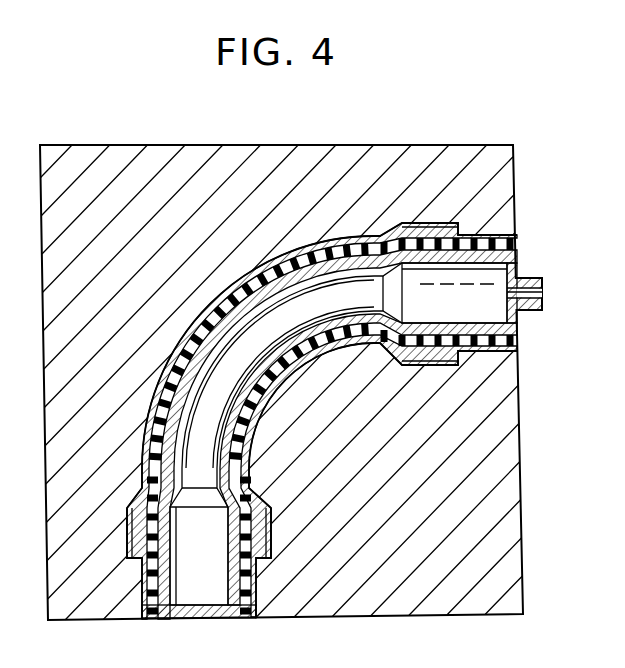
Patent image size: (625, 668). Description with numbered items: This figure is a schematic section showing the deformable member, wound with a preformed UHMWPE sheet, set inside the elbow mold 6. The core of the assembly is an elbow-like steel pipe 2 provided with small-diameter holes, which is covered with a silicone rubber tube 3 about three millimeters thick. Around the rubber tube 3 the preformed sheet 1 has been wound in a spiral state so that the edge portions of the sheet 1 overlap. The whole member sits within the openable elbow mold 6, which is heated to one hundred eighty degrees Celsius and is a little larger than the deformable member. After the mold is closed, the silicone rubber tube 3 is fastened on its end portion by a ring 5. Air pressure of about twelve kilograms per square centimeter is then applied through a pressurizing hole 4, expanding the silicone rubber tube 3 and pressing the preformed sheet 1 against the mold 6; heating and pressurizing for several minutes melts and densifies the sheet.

The preformed sheet 1 is at (413, 232).
The elbow-like steel pipe 2 is at (473, 348).
The silicone rubber tube 3 is at (327, 240).
The pressurizing hole 4 is at (543, 292).
The ring 5 is at (493, 356).
The elbow mold 6 is at (463, 160).